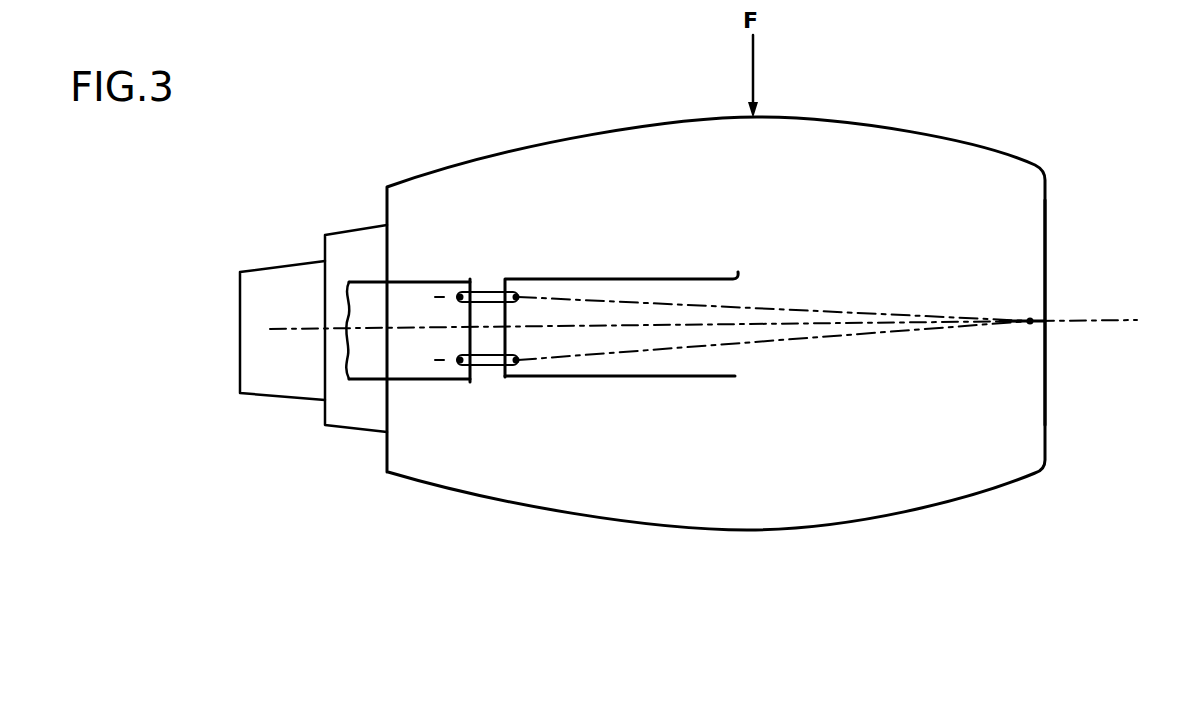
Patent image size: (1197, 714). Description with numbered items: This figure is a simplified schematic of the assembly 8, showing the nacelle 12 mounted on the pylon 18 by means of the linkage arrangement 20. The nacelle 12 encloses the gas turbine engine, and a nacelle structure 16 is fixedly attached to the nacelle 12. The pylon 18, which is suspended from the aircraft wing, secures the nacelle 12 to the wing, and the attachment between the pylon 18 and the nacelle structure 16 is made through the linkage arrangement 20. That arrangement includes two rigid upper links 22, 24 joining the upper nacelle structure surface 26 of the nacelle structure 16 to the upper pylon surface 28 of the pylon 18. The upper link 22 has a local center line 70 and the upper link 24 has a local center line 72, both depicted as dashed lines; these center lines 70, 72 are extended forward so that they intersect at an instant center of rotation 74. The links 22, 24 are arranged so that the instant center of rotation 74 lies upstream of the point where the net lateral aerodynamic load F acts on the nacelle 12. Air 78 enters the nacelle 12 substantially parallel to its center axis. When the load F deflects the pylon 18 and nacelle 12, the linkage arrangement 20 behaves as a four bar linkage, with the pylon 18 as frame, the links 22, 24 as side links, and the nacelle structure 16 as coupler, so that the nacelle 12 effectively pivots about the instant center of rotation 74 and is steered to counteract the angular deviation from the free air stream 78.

The assembly 8 is at (994, 100).
The nacelle 12 is at (797, 196).
The nacelle structure 16 is at (600, 278).
The pylon 18 is at (430, 281).
The linkage arrangement 20 is at (346, 170).
The upper link 22 is at (492, 367).
The upper link 24 is at (490, 291).
The upper nacelle structure surface 26 is at (717, 370).
The upper pylon surface 28 is at (400, 364).
The local center line 70 is at (823, 338).
The local center line 72 is at (835, 308).
The instant center of rotation 74 is at (1030, 316).
The air 78 is at (1058, 210).